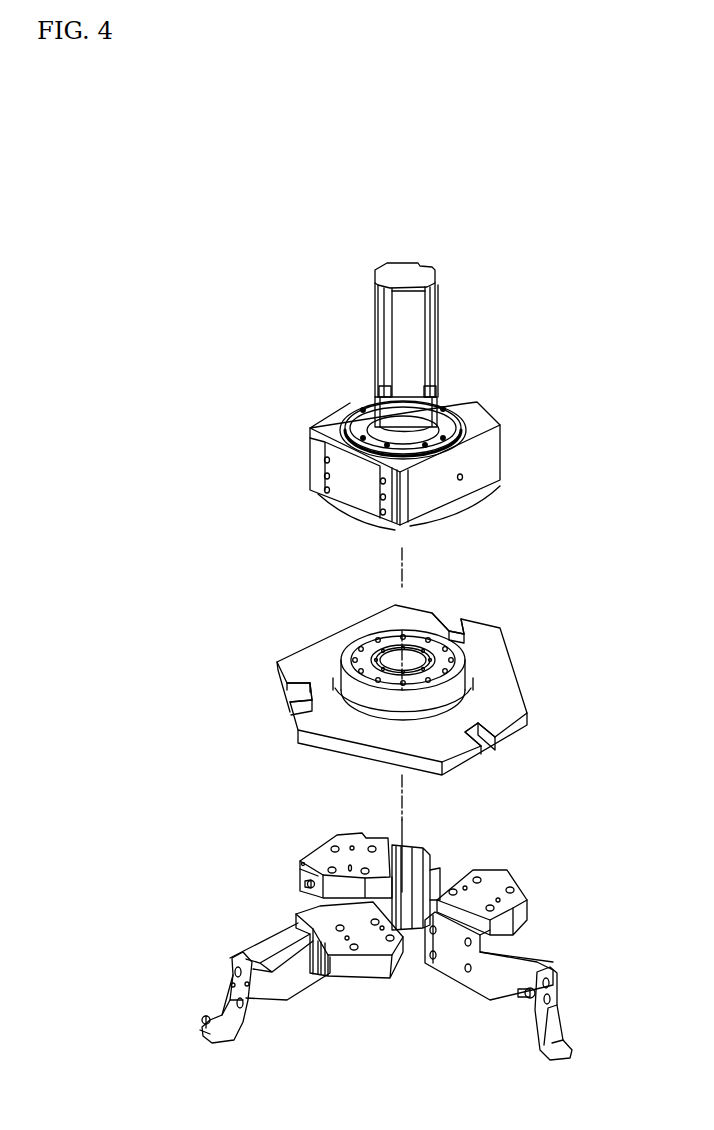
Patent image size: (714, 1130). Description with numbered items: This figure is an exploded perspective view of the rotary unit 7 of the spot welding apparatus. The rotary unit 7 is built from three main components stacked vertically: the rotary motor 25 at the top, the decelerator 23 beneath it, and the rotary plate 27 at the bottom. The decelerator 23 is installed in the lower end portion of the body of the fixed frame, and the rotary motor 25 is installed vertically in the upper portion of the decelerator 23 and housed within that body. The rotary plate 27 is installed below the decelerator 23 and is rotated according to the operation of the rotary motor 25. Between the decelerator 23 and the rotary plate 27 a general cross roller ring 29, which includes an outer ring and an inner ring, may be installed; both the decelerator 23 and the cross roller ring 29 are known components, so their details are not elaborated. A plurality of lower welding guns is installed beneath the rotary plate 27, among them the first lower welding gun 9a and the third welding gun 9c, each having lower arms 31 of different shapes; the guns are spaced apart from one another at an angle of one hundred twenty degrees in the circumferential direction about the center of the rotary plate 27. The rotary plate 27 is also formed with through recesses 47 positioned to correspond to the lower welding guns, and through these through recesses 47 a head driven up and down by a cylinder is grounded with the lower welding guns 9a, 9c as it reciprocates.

The rotary unit 7 is at (557, 331).
The rotary motor 25 is at (434, 318).
The decelerator 23 is at (498, 460).
The rotary plate 27 is at (510, 671).
The cross roller ring 29 is at (458, 642).
The through recess 47 is at (448, 620).
The first lower welding gun 9a is at (552, 1002).
The third welding gun 9c is at (230, 1047).
The lower arm 31 is at (552, 1020).